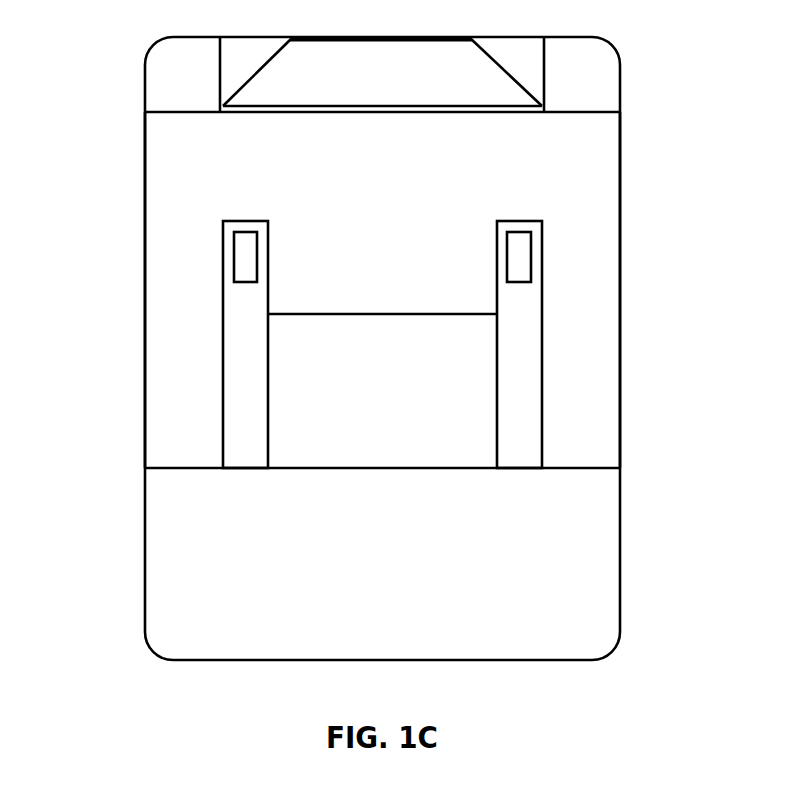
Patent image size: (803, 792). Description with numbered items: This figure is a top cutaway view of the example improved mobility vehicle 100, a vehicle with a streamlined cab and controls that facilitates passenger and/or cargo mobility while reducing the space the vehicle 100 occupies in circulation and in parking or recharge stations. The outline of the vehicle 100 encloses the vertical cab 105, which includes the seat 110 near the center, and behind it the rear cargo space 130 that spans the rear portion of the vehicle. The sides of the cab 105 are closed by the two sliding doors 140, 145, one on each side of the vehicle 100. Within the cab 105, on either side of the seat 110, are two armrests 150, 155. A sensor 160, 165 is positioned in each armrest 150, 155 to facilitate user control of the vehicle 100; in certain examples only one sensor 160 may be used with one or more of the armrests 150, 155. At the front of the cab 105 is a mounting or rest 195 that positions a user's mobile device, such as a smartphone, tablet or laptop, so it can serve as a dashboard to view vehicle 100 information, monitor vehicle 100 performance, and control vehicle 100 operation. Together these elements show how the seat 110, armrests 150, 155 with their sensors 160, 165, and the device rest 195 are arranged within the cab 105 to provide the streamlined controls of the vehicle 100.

The vehicle 100 is at (585, 661).
The vertical cab 105 is at (585, 148).
The seat 110 is at (382, 359).
The rear cargo space 130 is at (383, 565).
The sliding door 140 is at (620, 185).
The sliding door 145 is at (145, 161).
The armrest 150 is at (520, 325).
The armrest 155 is at (243, 340).
The sensor 160 is at (520, 254).
The sensor 165 is at (243, 258).
The mounting or rest 195 is at (386, 66).